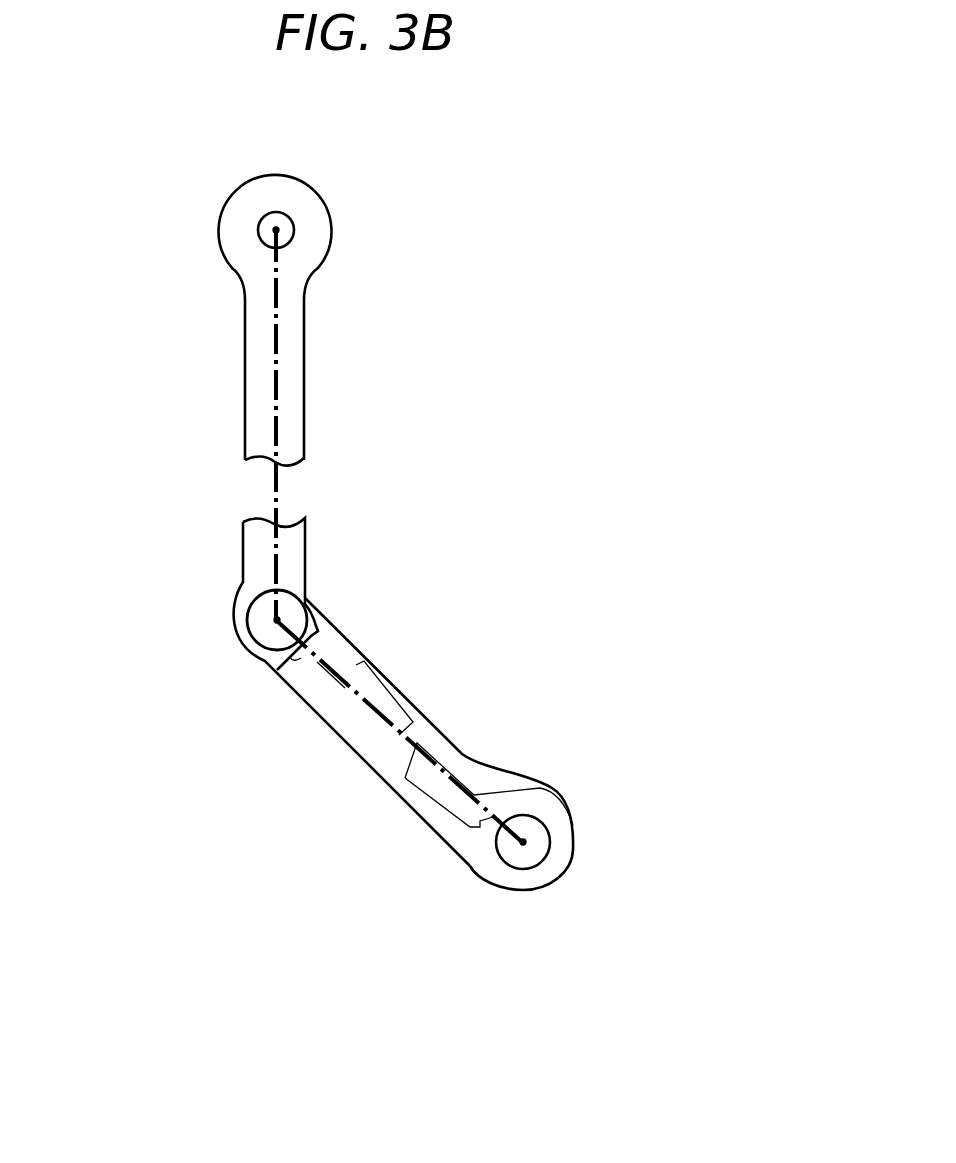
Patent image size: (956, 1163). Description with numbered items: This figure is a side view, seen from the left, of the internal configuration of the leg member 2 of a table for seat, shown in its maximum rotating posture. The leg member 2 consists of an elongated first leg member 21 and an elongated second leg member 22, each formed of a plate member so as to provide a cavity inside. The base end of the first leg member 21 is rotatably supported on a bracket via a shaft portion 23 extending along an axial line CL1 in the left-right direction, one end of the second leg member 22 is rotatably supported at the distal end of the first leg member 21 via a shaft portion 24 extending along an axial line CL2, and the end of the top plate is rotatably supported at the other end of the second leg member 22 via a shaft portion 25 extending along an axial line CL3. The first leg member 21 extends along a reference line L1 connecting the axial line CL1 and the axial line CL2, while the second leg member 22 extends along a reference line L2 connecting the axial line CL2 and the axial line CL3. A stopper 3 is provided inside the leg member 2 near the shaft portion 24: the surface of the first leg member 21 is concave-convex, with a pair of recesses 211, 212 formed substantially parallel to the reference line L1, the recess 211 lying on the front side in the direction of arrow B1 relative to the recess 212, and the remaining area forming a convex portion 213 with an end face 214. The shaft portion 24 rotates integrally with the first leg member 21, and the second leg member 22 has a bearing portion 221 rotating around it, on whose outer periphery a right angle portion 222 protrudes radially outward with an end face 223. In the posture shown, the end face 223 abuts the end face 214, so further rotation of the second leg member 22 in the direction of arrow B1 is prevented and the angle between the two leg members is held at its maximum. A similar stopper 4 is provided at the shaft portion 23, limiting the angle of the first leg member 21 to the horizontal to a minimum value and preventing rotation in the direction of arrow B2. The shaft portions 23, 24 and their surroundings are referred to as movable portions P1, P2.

The leg member 2 is at (319, 520).
The stopper 3 is at (230, 635).
The stopper 4 is at (609, 879).
The first leg member 21 is at (429, 765).
The second leg member 22 is at (246, 342).
The shaft portion 23 is at (535, 868).
The shaft portion 24 is at (246, 630).
The shaft portion 25 is at (262, 214).
The recess 211 is at (445, 767).
The recess 212 is at (334, 764).
The convex portion 213 is at (299, 735).
The end face 214 is at (306, 637).
The bearing portion 221 is at (238, 660).
The right angle portion 222 is at (291, 660).
The end face 223 is at (296, 688).
The axial line CL1 is at (467, 887).
The axial line CL2 is at (212, 583).
The axial line CL3 is at (288, 222).
The reference line L1 is at (363, 688).
The reference line L2 is at (327, 562).
The movable portion P1 is at (500, 938).
The movable portion P2 is at (137, 618).
The arrow direction B1 is at (152, 439).
The arrow direction B2 is at (356, 841).